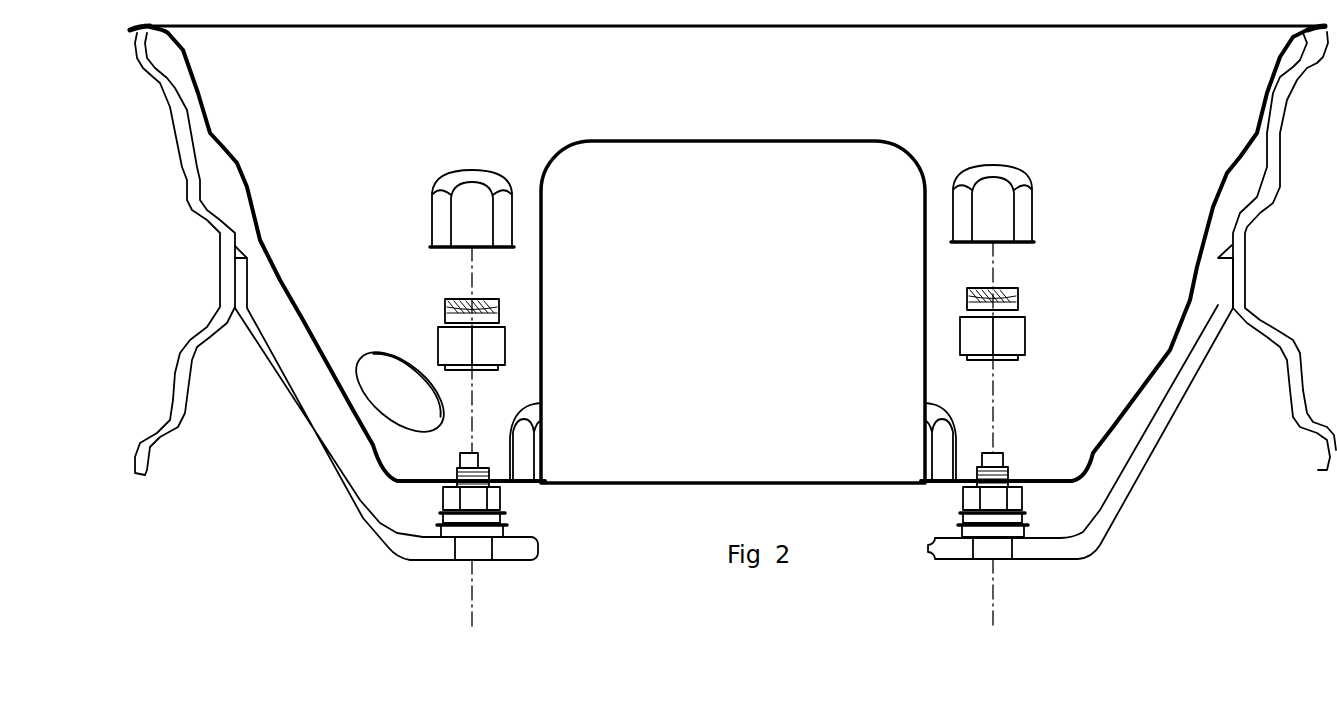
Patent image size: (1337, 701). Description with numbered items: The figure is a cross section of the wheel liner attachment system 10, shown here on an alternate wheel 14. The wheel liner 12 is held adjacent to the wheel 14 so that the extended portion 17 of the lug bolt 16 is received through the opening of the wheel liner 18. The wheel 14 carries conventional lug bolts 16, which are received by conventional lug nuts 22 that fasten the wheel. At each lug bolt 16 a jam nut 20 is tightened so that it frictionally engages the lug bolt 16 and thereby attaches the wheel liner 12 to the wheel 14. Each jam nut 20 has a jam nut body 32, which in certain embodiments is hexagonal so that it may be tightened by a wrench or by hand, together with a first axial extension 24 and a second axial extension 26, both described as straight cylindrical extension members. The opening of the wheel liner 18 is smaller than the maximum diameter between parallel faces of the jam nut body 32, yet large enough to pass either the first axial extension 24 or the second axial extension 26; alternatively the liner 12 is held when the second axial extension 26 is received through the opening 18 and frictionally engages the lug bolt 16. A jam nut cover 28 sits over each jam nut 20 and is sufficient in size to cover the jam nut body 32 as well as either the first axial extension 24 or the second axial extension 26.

The wheel liner attachment system 10 is at (1194, 480).
The wheel liner 12 is at (220, 147).
The wheel 14 is at (277, 378).
The lug bolt 16 is at (453, 479).
The extended portion 17 is at (458, 472).
The opening of the wheel liner 18 is at (491, 475).
The jam nut 20 is at (408, 339).
The lug nut 22 is at (500, 513).
The first axial extension 24 is at (455, 367).
The second axial extension 26 is at (447, 312).
The jam nut cover 28 is at (460, 170).
The jam nut body 32 is at (497, 345).